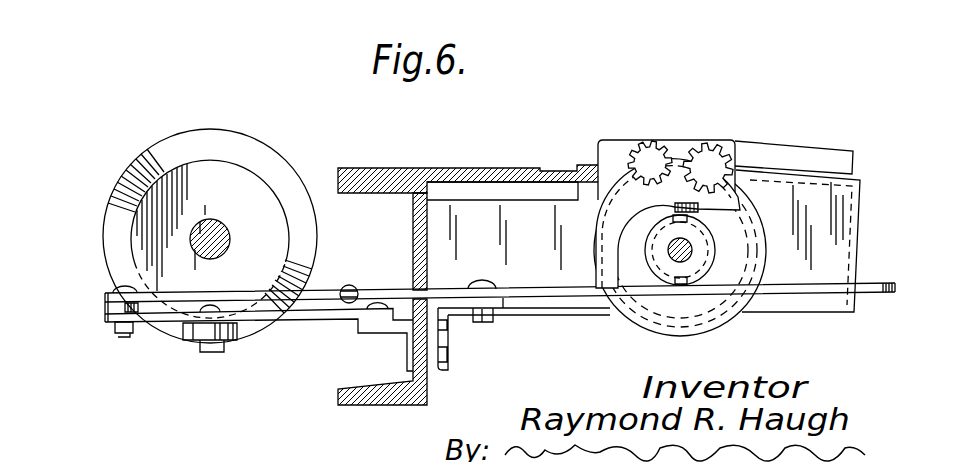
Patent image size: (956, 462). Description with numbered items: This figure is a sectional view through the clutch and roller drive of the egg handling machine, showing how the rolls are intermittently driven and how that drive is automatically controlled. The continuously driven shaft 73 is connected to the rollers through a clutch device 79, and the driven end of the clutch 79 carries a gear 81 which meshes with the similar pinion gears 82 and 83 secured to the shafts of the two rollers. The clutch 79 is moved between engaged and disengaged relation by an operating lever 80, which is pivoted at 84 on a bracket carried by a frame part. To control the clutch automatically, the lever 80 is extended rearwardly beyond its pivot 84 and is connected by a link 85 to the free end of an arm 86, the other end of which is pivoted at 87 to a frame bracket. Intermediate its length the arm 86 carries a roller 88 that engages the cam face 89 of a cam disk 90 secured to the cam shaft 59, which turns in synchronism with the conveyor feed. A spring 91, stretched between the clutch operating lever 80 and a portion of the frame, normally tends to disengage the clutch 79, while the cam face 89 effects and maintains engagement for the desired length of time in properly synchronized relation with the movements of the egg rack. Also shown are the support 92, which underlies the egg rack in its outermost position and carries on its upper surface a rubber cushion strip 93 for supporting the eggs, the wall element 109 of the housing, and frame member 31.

The frame member 31 is at (391, 405).
The cam shaft 59 is at (230, 236).
The shaft 73 is at (692, 250).
The clutch device 79 is at (695, 336).
The operating lever 80 is at (866, 294).
The gear 81 is at (744, 192).
The pinion gear 82 is at (710, 143).
The pinion gear 83 is at (652, 140).
The pivot 84 is at (494, 284).
The link 85 is at (107, 303).
The arm 86 is at (293, 315).
The pivot 87 is at (366, 347).
The roller 88 is at (193, 336).
The cam face 89 is at (122, 197).
The cam disk 90 is at (214, 135).
The spring 91 is at (354, 285).
The support 92 is at (855, 218).
The cushion strip 93 is at (812, 160).
The wall element 109 is at (506, 167).